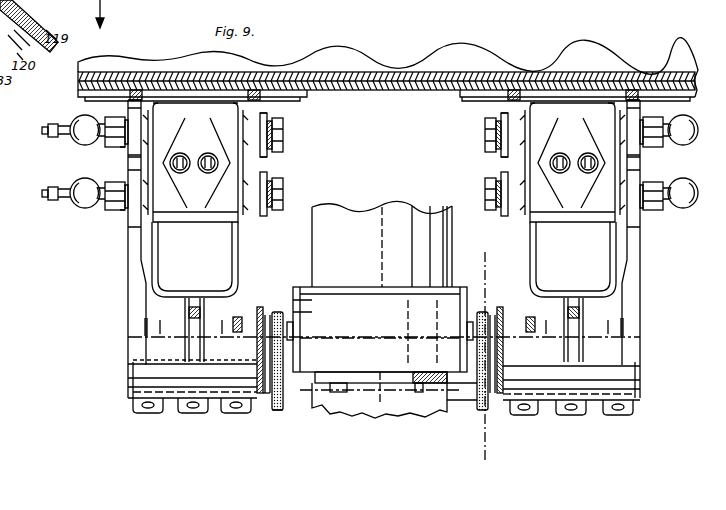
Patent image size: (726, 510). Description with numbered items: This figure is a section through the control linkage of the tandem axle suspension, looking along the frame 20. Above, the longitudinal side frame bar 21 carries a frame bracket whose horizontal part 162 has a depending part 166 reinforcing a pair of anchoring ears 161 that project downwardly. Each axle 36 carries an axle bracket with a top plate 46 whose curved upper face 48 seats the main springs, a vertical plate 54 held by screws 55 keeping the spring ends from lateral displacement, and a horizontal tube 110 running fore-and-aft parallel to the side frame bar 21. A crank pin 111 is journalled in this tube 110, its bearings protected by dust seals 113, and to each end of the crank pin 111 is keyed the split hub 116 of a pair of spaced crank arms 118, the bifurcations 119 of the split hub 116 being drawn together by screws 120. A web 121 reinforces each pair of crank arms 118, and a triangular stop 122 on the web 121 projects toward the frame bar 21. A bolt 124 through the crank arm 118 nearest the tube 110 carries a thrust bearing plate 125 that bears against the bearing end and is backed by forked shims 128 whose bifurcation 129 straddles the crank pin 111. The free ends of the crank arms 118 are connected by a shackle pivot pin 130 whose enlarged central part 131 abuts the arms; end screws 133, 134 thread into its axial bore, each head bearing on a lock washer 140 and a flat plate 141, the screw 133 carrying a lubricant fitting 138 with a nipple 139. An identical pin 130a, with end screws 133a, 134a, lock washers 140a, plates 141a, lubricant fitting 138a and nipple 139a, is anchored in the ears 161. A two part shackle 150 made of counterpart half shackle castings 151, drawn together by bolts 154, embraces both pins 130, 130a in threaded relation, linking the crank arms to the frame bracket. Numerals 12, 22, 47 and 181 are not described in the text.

The section line / axle centerline 12 is at (487, 260).
The frame 20 is at (656, 60).
The longitudinal side frame bar 21 is at (355, 90).
The rail 22 is at (413, 72).
The tandem axle 36 is at (412, 207).
The top plate 46 is at (392, 290).
The housing edge 47 is at (348, 288).
The curved upper face 48 is at (380, 329).
The vertical plate 54 is at (377, 378).
The screws 55 is at (413, 387).
The horizontal tube 110 is at (455, 400).
The crank pin 111 is at (133, 358).
The dust seals 113 is at (276, 409).
The split hub 116 is at (133, 378).
The crank arms 118 is at (128, 261).
The bifurcations 119 is at (150, 413).
The screws 120 is at (195, 413).
The web 121 is at (174, 302).
The triangular stop 122 is at (188, 328).
The bolt 124 is at (230, 323).
The thrust bearing plate 125 is at (266, 408).
The shims 128 is at (259, 312).
The bifurcation 129 is at (258, 360).
The shackle pivot pin 130 is at (289, 192).
The shackle pivot pin 130a is at (290, 137).
The enlarged central part 131 is at (145, 198).
The screw 133 is at (117, 210).
The end screw 133a is at (123, 120).
The screw 134 is at (272, 211).
The end screw 134a is at (286, 121).
The lubricant fitting 138 is at (82, 182).
The lubricant fitting 138a is at (89, 144).
The nipple 139 is at (47, 193).
The nipple 139a is at (48, 131).
The lock washer 140 is at (123, 217).
The lock washer 140a is at (285, 144).
The flat plate 141 is at (128, 175).
The flat plate 141a is at (267, 158).
The two part shackle 150 is at (170, 224).
The half shackle castings 151 is at (384, 163).
The bolts 154 is at (204, 178).
The anchoring ears 161 is at (243, 112).
The horizontal part 162 is at (158, 90).
The depending part 166 is at (88, 104).
The clamp corner 181 is at (153, 113).